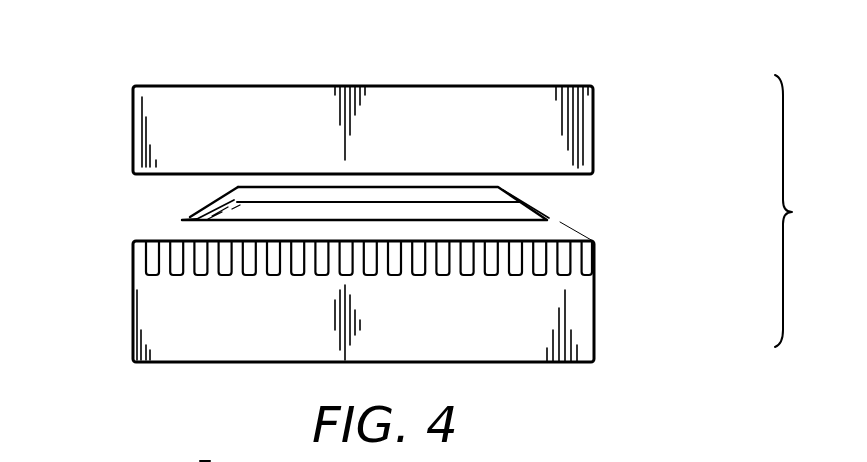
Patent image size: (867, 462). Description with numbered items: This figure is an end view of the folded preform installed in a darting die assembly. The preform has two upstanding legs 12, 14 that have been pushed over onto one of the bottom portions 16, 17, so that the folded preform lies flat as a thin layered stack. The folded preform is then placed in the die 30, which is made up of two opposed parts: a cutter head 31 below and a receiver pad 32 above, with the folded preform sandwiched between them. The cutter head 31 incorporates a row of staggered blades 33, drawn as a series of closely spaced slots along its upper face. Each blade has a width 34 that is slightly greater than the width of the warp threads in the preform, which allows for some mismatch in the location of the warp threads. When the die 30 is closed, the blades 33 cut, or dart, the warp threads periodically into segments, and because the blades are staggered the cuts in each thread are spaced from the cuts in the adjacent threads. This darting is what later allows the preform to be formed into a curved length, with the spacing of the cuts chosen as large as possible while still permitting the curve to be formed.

The upstanding leg 12 is at (498, 189).
The upstanding leg 14 is at (217, 198).
The bottom portion 16 is at (182, 217).
The bottom portion 17 is at (547, 220).
The die 30 is at (564, 226).
The cutter head 31 is at (594, 337).
The receiver pad 32 is at (165, 85).
The staggered blades 33 is at (132, 246).
The width 34 is at (187, 224).